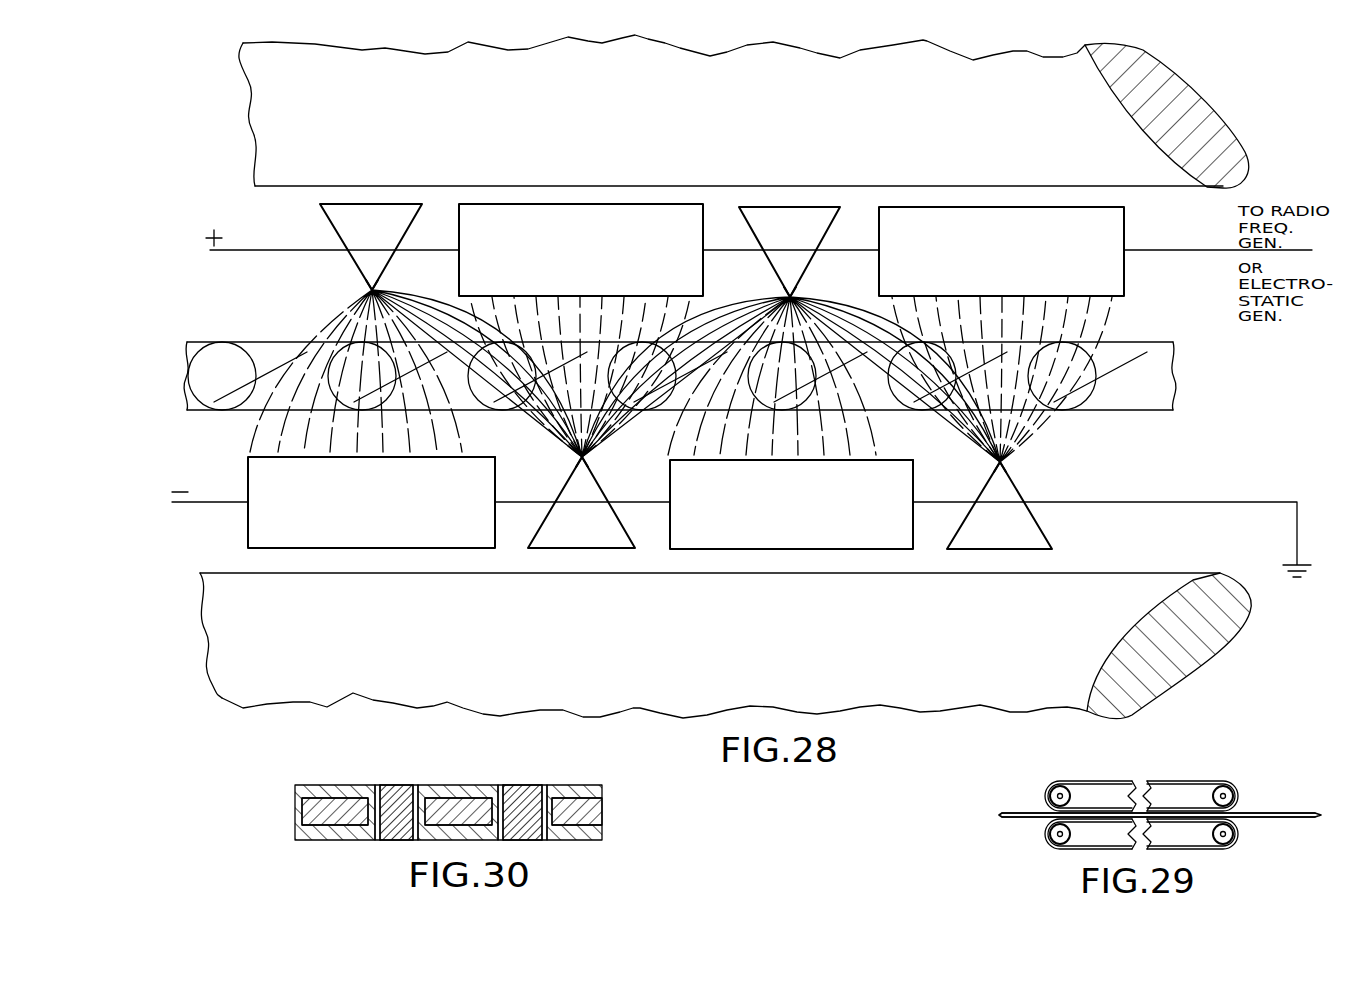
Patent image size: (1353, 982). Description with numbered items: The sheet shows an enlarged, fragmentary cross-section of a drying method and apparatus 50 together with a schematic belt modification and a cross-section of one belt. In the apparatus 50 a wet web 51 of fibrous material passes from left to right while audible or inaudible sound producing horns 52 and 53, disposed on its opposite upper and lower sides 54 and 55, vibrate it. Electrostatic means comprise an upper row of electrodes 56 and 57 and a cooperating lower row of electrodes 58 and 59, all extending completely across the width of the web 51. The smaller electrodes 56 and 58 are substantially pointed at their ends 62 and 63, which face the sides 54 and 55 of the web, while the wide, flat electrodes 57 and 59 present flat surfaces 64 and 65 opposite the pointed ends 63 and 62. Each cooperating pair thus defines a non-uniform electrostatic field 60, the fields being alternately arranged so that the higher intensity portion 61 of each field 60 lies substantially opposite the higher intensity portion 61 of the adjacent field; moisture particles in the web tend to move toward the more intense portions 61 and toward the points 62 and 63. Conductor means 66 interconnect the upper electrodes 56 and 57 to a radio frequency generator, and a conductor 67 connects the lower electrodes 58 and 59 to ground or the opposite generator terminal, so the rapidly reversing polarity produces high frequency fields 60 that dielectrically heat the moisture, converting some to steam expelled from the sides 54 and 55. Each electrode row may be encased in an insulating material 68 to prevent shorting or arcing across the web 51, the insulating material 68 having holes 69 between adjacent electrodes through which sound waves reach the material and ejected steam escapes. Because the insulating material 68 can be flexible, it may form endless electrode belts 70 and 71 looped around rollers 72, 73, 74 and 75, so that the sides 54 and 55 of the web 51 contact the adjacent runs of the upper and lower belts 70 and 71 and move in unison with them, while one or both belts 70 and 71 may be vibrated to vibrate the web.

In FIG. 28, the method and apparatus 50 is at (1250, 130).
In FIG. 28, the wet web 51 is at (1160, 380).
In FIG. 29, the wet web 51 is at (1013, 812).
In FIG. 28, the sound producing horn 52 is at (1153, 83).
In FIG. 28, the sound producing horn 53 is at (1155, 677).
In FIG. 28, the upper side of web 54 is at (1135, 345).
In FIG. 29, the upper side of web 54 is at (1020, 813).
In FIG. 28, the lower side of web 55 is at (1140, 412).
In FIG. 29, the lower side of web 55 is at (1020, 818).
In FIG. 28, the upper pointed electrode 56 is at (337, 225).
In FIG. 30, the upper pointed electrode 56 is at (392, 790).
In FIG. 28, the upper flat electrode 57 is at (565, 215).
In FIG. 30, the upper flat electrode 57 is at (443, 803).
In FIG. 28, the lower pointed electrode 58 is at (612, 540).
In FIG. 28, the lower flat electrode 59 is at (258, 515).
In FIG. 28, the non-uniform electrostatic field 60 is at (342, 337).
In FIG. 28, the higher intensity portion of field 61 is at (367, 305).
In FIG. 28, the pointed end of upper electrode 62 is at (375, 292).
In FIG. 28, the pointed end of lower electrode 63 is at (590, 465).
In FIG. 28, the flat surface of upper electrode 64 is at (487, 297).
In FIG. 28, the flat surface of lower electrode 65 is at (455, 457).
In FIG. 28, the conductor means 66 is at (721, 222).
In FIG. 28, the conductor 67 is at (943, 505).
In FIG. 30, the insulating material 68 is at (580, 792).
In FIG. 30, the holes 69 is at (510, 797).
In FIG. 29, the upper electrode belt 70 is at (1195, 762).
In FIG. 29, the lower electrode belt 71 is at (1200, 850).
In FIG. 29, the roller 72 is at (1068, 782).
In FIG. 29, the roller 73 is at (1231, 786).
In FIG. 29, the roller 74 is at (1059, 844).
In FIG. 29, the roller 75 is at (1230, 838).